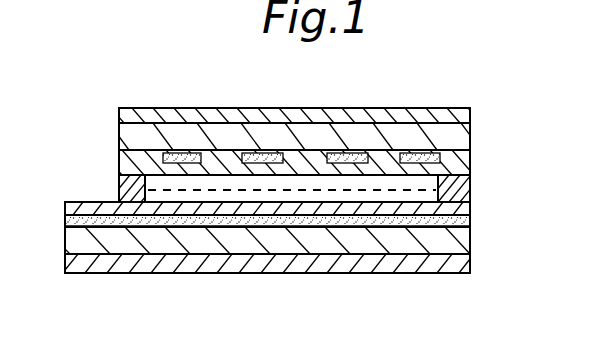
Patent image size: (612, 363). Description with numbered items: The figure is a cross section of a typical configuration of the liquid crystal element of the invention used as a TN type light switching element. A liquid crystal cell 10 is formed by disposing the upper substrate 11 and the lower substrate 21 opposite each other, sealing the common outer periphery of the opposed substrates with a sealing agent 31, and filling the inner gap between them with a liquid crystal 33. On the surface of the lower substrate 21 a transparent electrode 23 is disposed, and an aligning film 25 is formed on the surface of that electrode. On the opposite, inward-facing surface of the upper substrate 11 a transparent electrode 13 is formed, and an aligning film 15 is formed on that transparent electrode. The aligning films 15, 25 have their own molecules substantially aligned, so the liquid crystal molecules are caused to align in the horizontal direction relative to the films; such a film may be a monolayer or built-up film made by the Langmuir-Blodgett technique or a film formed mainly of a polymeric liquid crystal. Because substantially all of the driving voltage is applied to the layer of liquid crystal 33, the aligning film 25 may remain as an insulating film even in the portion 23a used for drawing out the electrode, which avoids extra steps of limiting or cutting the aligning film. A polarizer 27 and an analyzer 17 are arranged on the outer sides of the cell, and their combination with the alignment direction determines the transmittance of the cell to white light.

The liquid crystal cell 10 is at (108, 163).
The upper substrate 11 is at (470, 138).
The transparent electrode 13 is at (348, 155).
The aligning film 15 is at (388, 157).
The analyzer 17 is at (250, 108).
The lower substrate 21 is at (467, 243).
The transparent electrode 23 is at (67, 222).
The portion for drawing out an electrode 23a is at (108, 222).
The aligning film 25 is at (460, 210).
The polarizer 27 is at (270, 276).
The sealing agent 31 is at (118, 188).
The liquid crystal 33 is at (428, 187).